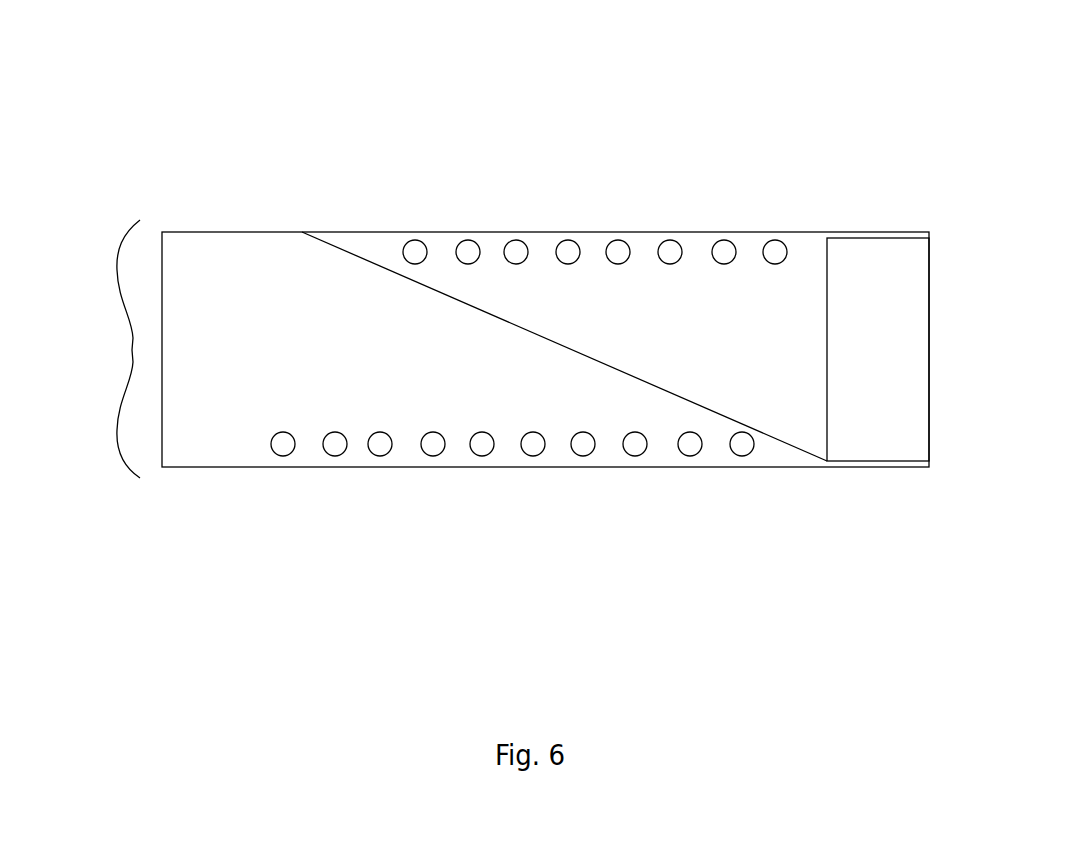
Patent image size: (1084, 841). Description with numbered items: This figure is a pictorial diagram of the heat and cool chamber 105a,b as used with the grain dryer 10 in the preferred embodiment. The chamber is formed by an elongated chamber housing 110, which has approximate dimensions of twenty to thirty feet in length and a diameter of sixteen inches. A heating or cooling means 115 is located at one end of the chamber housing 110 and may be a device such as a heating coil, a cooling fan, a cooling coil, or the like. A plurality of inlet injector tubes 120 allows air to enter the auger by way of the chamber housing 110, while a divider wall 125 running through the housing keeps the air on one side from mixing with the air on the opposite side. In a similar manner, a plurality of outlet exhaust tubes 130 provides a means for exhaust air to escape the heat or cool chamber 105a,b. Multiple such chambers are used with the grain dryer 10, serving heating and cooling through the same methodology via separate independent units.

The grain dryer 10 is at (97, 168).
The heat and cool chamber 105a,b is at (132, 350).
The chamber housing 110 is at (213, 467).
The heating or cooling means 115 is at (876, 347).
The inlet injector tubes 120 is at (413, 240).
The divider wall 125 is at (611, 367).
The outlet exhaust tubes 130 is at (378, 456).